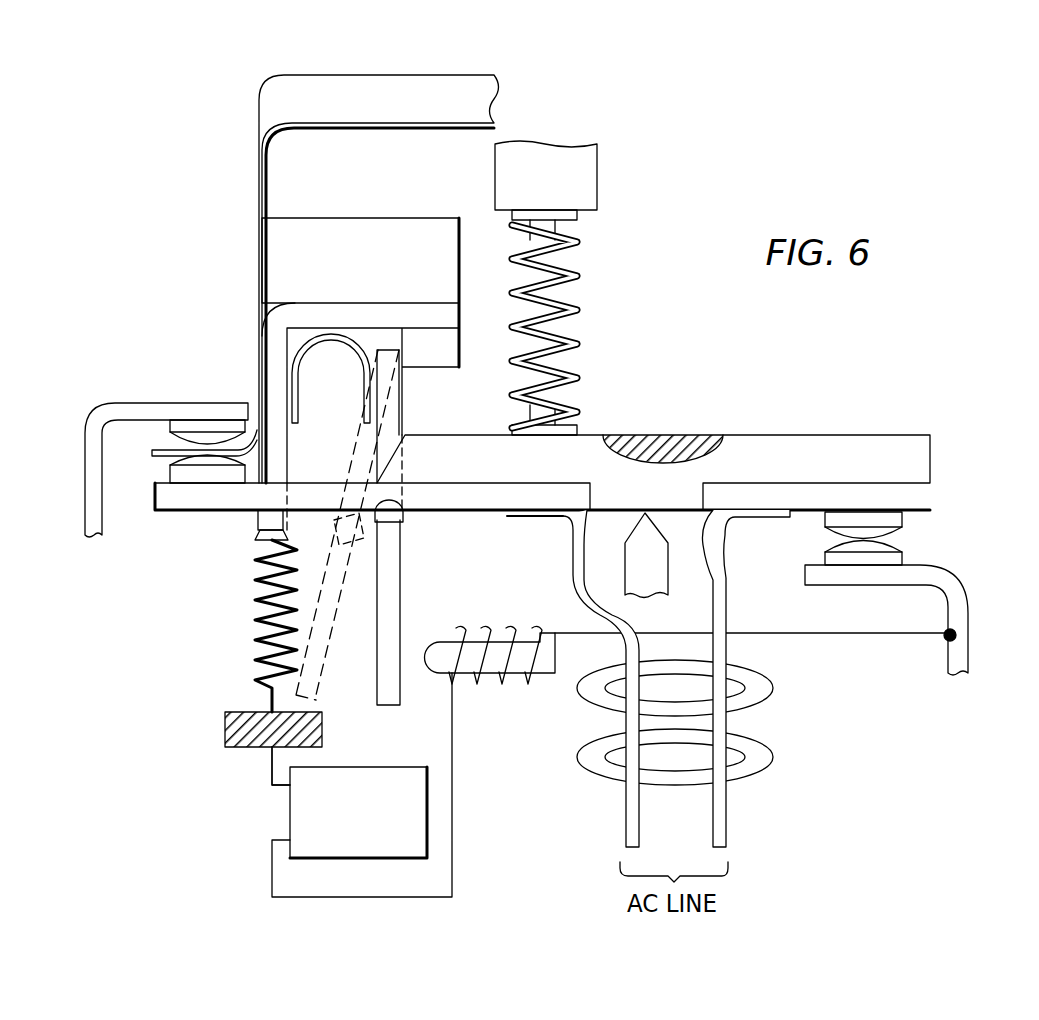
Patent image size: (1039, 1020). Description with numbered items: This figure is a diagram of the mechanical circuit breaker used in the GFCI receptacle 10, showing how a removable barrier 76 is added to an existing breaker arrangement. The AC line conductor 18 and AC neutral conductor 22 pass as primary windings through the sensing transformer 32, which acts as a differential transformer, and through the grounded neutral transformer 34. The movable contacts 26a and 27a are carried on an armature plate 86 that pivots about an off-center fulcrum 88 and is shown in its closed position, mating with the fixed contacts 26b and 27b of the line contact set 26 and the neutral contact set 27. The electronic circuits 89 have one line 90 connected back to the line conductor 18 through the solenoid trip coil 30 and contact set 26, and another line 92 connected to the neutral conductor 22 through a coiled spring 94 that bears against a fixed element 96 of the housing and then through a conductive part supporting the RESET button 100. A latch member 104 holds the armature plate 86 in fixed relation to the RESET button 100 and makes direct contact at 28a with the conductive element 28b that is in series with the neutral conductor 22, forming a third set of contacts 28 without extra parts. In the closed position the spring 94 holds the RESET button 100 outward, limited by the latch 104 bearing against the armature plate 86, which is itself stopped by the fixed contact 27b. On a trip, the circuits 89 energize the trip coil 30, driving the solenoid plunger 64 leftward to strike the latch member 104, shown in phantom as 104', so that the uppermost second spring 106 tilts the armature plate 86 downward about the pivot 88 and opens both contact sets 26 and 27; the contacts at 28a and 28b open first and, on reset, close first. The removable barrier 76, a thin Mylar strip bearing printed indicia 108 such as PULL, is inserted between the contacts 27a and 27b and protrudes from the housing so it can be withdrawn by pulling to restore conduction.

The GFCI receptacle 10 is at (870, 765).
The AC line conductor 18 is at (727, 792).
The AC neutral conductor 22 is at (625, 812).
The contact set 26 is at (883, 588).
The movable contact 26a is at (900, 537).
The fixed contact 26b is at (905, 553).
The second contact set 27 is at (171, 452).
The movable contact 27a is at (207, 478).
The fixed contact 27b is at (198, 437).
The third set of contacts 28 is at (368, 548).
The latch member contact point 28a is at (318, 500).
The conductive element 28b is at (395, 474).
The solenoid trip coil 30 is at (497, 630).
The sensing transformer 32 is at (765, 690).
The grounded neutral transformer 34 is at (765, 752).
The solenoid plunger 64 is at (440, 645).
The removable barrier 76 is at (270, 93).
The armature plate 86 is at (682, 437).
The fulcrum 88 is at (645, 597).
The electronic circuits 89 is at (412, 767).
The line 90 is at (268, 880).
The line 92 is at (268, 775).
The coiled spring 94 is at (258, 630).
The fixed element 96 is at (228, 714).
The RESET button 100 is at (387, 218).
The latch member 104 is at (422, 602).
The latch member in deflected position 104' is at (357, 701).
The second spring 106 is at (575, 307).
The printed indicia 108 is at (405, 75).